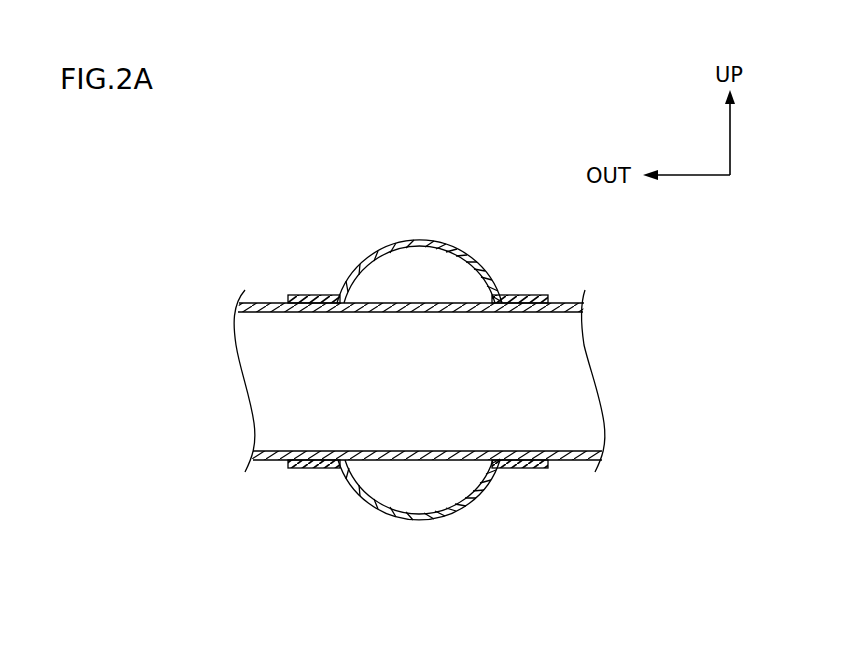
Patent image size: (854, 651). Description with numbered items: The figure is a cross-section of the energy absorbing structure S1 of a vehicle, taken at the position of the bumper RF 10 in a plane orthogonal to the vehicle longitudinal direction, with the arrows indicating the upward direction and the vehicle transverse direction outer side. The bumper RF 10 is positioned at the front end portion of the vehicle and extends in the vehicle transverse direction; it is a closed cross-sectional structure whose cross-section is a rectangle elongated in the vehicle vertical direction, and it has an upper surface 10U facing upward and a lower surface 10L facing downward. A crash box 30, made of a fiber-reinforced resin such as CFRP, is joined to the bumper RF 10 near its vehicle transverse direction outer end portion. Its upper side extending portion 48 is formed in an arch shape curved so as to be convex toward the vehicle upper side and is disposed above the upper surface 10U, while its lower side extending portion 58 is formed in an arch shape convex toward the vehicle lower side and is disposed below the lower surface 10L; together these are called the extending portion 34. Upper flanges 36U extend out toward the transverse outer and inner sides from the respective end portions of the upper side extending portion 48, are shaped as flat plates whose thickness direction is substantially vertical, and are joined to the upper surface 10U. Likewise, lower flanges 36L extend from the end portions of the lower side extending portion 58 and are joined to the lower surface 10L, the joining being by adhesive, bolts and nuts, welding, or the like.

The bumper RF 10 is at (419, 380).
The upper surface 10U is at (255, 302).
The lower surface 10L is at (254, 461).
The crash box 30 is at (308, 173).
The extending portion 34 is at (419, 384).
The upper flanges 36U is at (312, 295).
The lower flanges 36L is at (322, 468).
The upper side extending portion 48 is at (419, 240).
The lower side extending portion 58 is at (430, 521).
The energy absorbing structure S1 is at (515, 132).